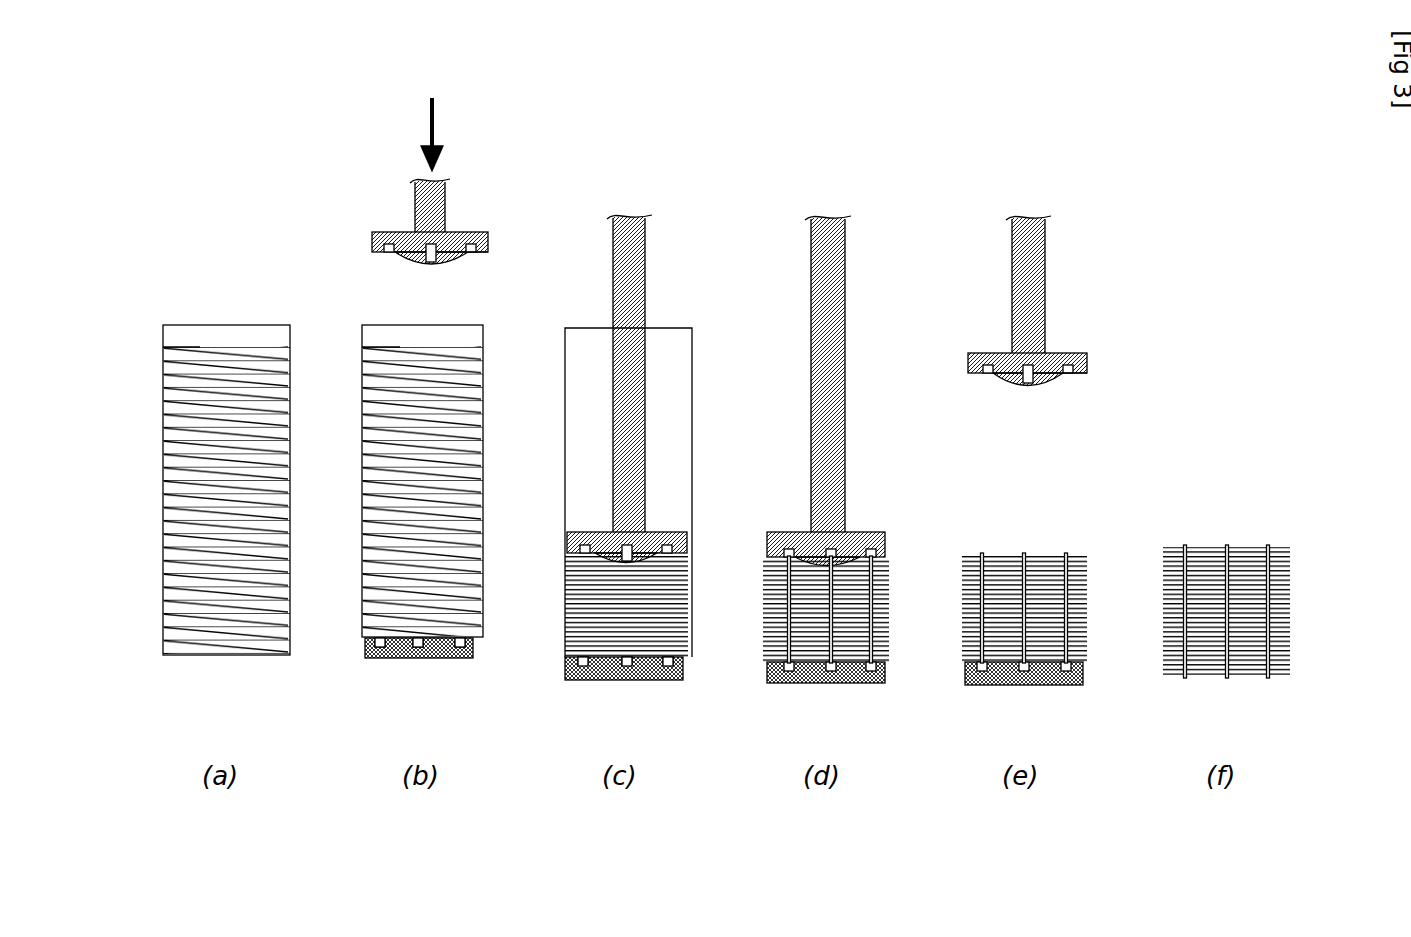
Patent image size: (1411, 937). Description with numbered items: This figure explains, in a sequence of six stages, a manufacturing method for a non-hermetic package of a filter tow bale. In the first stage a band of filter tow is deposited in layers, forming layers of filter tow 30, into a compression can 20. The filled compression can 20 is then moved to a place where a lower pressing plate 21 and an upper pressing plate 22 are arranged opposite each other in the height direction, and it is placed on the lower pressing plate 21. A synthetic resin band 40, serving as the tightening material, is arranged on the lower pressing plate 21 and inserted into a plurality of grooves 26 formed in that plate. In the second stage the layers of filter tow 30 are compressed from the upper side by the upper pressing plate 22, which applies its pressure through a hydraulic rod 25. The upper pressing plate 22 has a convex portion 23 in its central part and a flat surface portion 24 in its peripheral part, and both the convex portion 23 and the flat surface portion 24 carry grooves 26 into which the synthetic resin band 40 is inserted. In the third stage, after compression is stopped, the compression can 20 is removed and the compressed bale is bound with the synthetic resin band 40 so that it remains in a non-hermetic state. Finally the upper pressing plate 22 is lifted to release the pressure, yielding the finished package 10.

The package 10 is at (1258, 530).
The compression can 20 is at (163, 393).
The lower pressing plate 21 is at (405, 659).
The upper pressing plate 22 is at (469, 232).
The convex portion 23 is at (416, 260).
The flat surface portion 24 is at (484, 253).
The hydraulic rod 25 is at (415, 193).
The grooves 26 is at (389, 252).
The layers of filter tow 30 is at (213, 347).
The synthetic resin band 40 is at (782, 655).